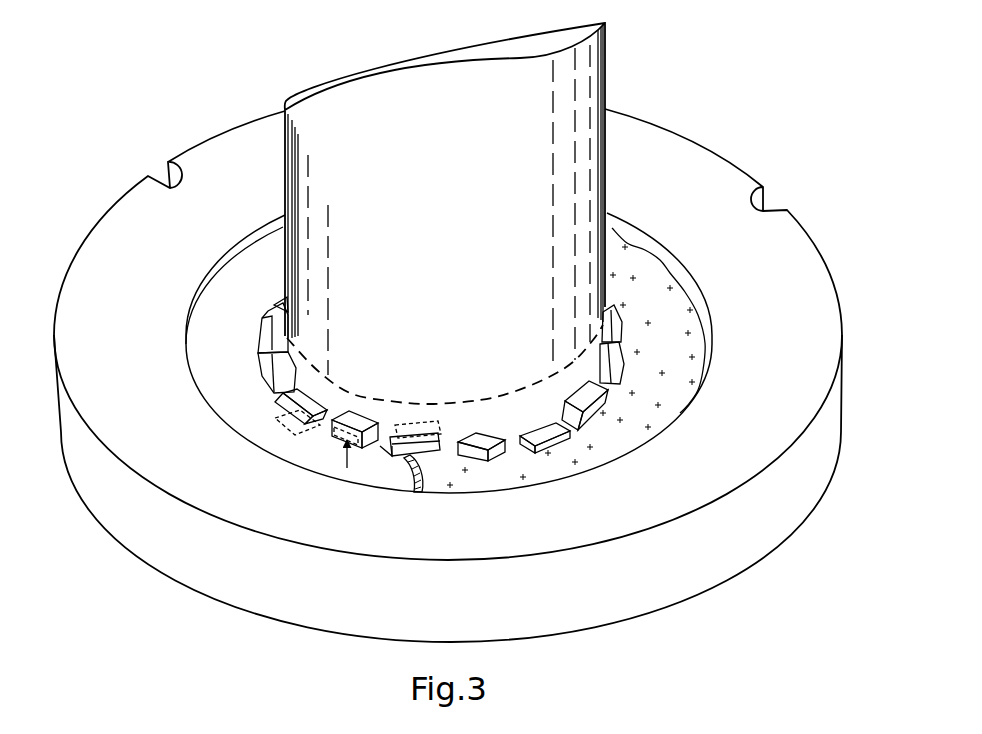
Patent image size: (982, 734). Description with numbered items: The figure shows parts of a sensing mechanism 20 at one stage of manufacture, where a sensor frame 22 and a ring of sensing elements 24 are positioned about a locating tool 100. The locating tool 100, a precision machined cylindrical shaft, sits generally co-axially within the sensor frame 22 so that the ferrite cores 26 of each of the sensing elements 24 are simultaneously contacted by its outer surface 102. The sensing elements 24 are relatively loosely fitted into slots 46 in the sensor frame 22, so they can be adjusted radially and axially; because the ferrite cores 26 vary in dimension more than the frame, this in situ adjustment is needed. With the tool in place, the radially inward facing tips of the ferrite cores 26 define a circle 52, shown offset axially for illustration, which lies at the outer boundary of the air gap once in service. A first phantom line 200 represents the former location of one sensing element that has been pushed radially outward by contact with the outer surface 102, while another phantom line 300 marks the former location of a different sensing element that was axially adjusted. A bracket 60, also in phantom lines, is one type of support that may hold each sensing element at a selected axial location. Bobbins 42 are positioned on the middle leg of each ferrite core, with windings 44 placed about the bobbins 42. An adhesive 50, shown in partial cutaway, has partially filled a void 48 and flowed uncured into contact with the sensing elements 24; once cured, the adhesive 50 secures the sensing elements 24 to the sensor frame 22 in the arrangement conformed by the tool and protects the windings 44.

The sensing mechanism 20 is at (787, 543).
The sensor frame 22 is at (672, 578).
The sensing elements 24 is at (252, 362).
The ferrite cores 26 is at (264, 372).
The bobbins 42 is at (497, 452).
The windings 44 is at (453, 455).
The slots 46 is at (270, 328).
The void 48 is at (203, 374).
The adhesive 50 is at (590, 453).
The circle 52 is at (606, 400).
The bracket 60 is at (273, 437).
The locating tool 100 is at (606, 68).
The outer surface 102 is at (467, 181).
The first phantom line 200 is at (430, 424).
The phantom line 300 is at (332, 433).